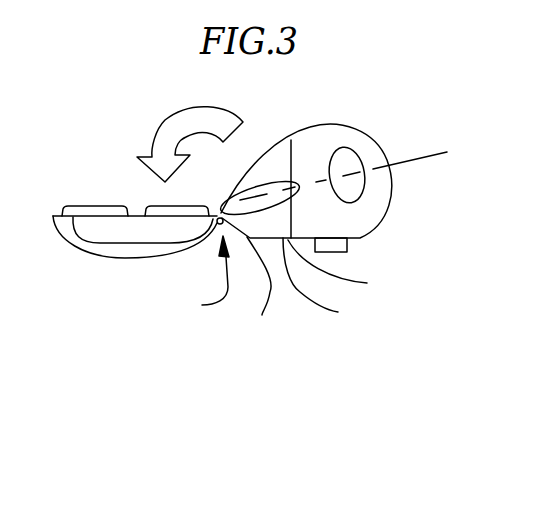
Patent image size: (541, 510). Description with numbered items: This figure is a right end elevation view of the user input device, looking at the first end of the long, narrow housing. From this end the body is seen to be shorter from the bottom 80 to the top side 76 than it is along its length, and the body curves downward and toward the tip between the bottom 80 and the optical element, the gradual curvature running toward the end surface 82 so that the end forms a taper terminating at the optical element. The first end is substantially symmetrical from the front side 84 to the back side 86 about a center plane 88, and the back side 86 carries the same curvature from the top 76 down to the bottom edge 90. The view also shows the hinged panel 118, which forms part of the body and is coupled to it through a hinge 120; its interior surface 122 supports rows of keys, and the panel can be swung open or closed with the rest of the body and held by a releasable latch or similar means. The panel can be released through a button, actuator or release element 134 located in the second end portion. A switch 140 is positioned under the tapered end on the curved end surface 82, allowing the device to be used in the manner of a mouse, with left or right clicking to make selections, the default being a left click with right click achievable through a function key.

The top side 76 is at (387, 153).
The bottom 80 is at (250, 283).
The end surface 82 is at (343, 269).
The front side 84 is at (291, 140).
The back side 86 is at (324, 283).
The center plane 88 is at (418, 158).
The bottom edge 90 is at (218, 210).
The hinged panel 118 is at (125, 285).
The hinge 120 is at (197, 280).
The interior surface 122 is at (131, 207).
The release element 134 is at (347, 245).
The switch 140 is at (243, 122).